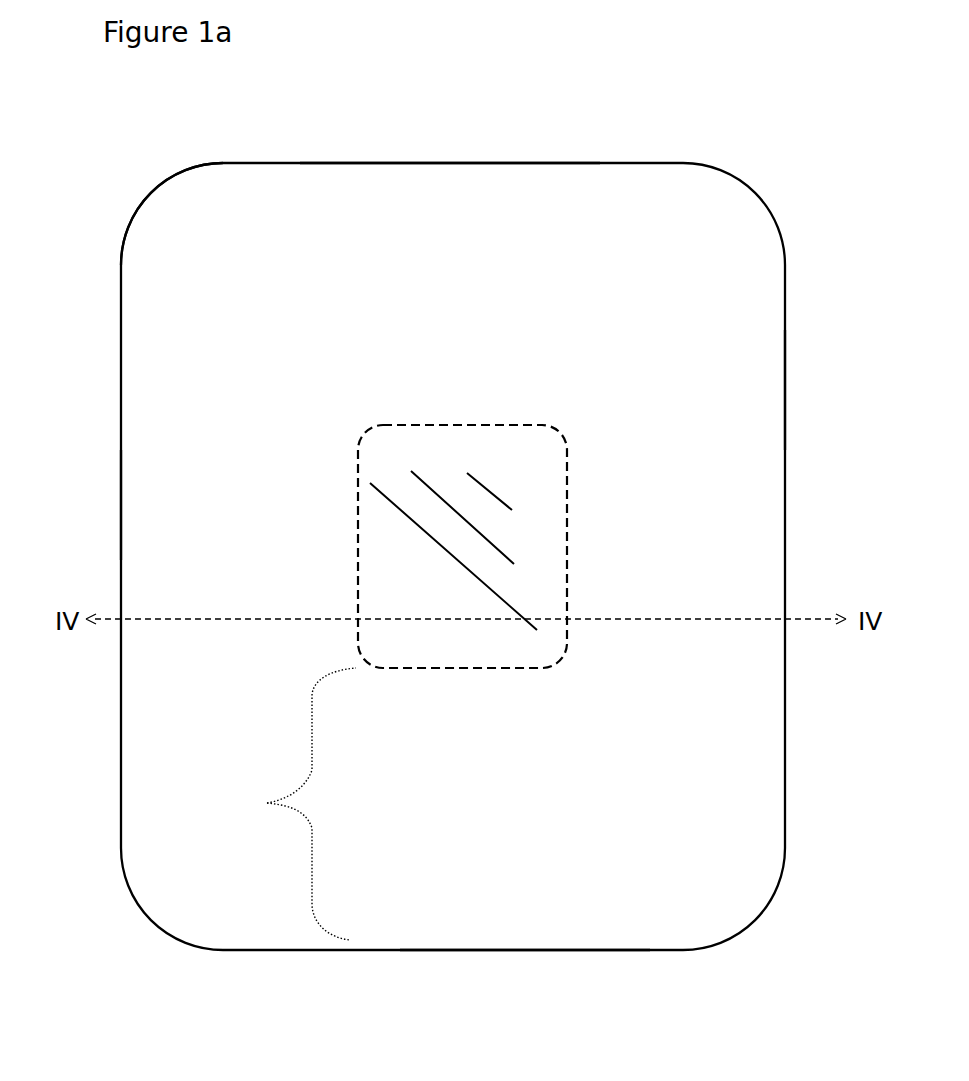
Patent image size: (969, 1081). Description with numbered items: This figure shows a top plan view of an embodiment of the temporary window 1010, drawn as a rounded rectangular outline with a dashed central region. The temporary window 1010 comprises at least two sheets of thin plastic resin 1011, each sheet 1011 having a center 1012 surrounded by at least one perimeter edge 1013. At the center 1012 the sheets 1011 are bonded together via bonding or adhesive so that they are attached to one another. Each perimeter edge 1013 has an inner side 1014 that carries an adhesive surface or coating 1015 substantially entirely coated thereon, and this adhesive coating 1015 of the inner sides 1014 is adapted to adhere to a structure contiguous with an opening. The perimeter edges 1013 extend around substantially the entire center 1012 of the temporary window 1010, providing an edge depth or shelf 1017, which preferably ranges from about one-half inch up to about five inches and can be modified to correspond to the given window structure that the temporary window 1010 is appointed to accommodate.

The temporary window 1010 is at (287, 117).
The sheet of thin plastic resin 1011 is at (222, 200).
The center 1012 is at (368, 522).
The perimeter edge 1013 is at (457, 200).
The inner side 1014 is at (358, 230).
The adhesive surface/coating 1015 is at (558, 275).
The edge depth/shelf 1017 is at (267, 803).